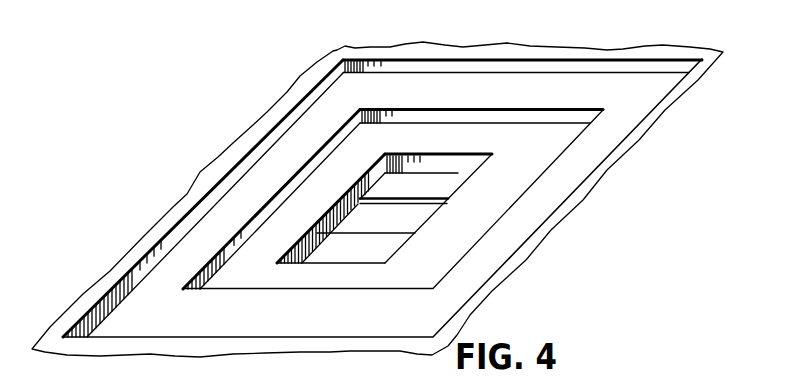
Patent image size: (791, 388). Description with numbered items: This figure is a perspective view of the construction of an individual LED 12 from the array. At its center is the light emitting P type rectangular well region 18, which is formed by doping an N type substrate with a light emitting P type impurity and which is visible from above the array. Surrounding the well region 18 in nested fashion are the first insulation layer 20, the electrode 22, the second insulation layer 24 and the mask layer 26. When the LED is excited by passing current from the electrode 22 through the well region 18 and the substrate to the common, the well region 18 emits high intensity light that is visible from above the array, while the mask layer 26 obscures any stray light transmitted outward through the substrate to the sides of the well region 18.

The LED 12 is at (627, 44).
The well region 18 is at (355, 219).
The first insulation layer 20 is at (362, 256).
The electrode 22 is at (537, 163).
The second insulation layer 24 is at (636, 107).
The mask layer 26 is at (328, 70).